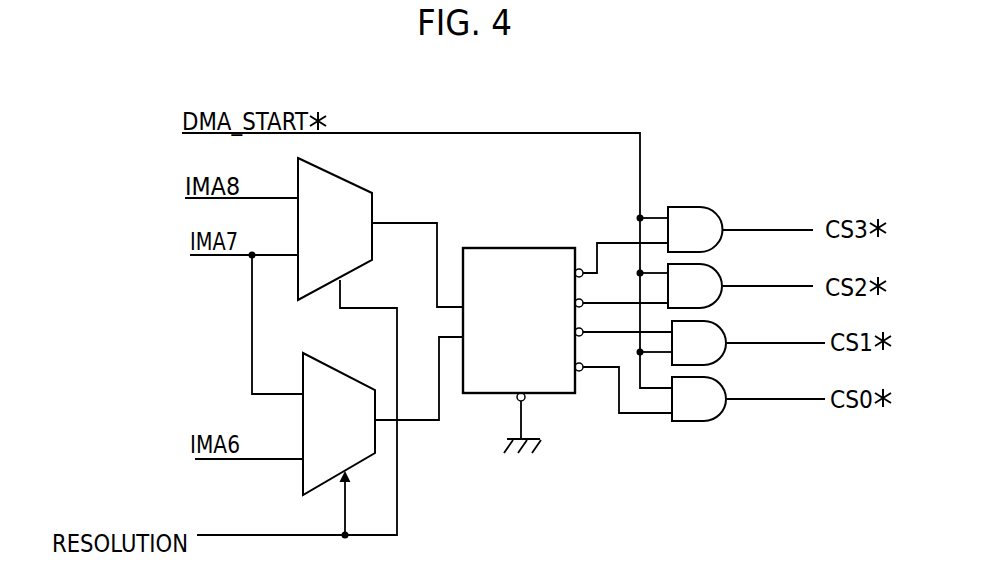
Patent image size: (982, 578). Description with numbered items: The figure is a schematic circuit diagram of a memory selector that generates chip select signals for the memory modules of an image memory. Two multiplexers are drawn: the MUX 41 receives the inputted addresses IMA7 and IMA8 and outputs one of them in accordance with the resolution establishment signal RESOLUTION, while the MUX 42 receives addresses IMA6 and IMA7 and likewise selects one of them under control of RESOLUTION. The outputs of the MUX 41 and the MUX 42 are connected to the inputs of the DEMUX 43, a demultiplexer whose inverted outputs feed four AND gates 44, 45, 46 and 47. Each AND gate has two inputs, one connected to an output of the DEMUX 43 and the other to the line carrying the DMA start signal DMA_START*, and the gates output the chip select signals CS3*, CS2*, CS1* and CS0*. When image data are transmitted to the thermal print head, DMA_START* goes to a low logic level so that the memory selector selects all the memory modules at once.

The MUX 41 is at (352, 183).
The MUX 42 is at (350, 377).
The demultiplexer (DEMUX) 43 is at (530, 247).
The AND gate 44 is at (700, 207).
The AND gate 45 is at (722, 274).
The AND gate 46 is at (724, 333).
The AND gate 47 is at (726, 389).